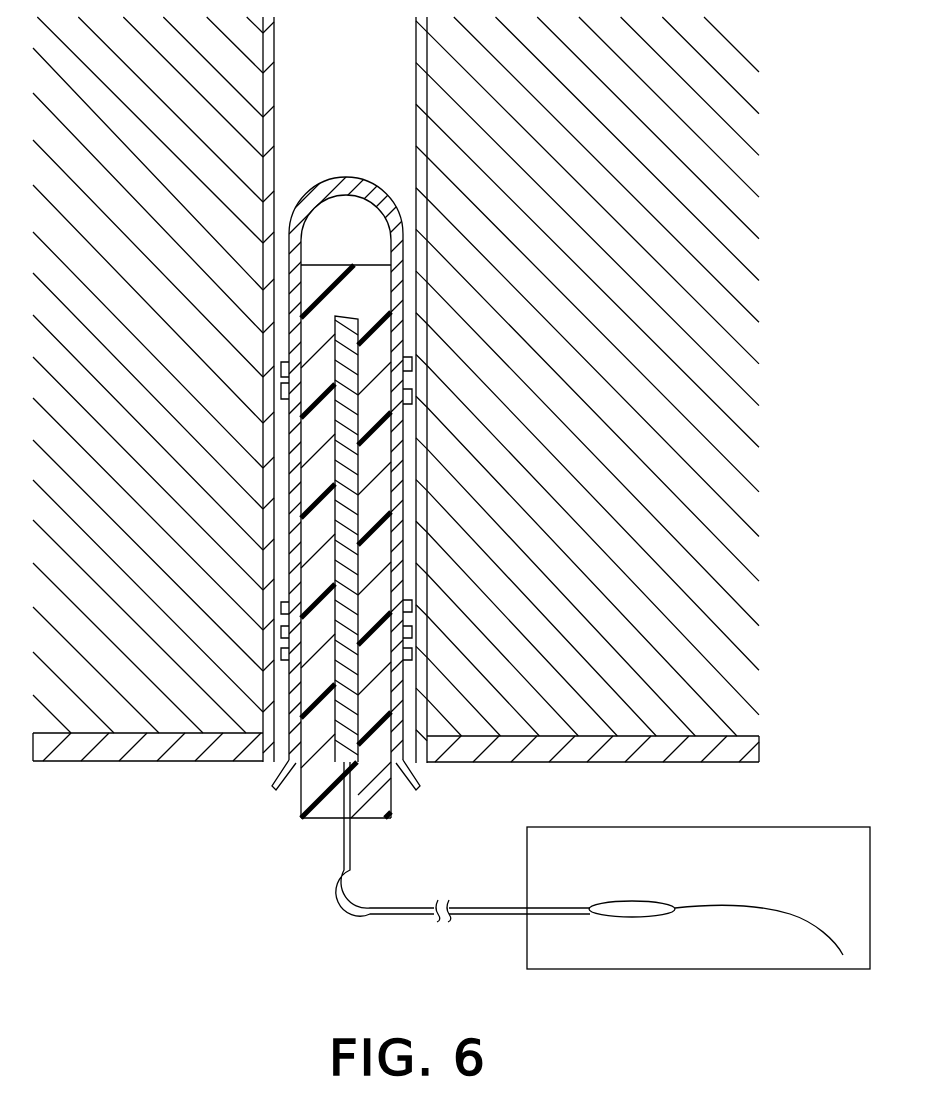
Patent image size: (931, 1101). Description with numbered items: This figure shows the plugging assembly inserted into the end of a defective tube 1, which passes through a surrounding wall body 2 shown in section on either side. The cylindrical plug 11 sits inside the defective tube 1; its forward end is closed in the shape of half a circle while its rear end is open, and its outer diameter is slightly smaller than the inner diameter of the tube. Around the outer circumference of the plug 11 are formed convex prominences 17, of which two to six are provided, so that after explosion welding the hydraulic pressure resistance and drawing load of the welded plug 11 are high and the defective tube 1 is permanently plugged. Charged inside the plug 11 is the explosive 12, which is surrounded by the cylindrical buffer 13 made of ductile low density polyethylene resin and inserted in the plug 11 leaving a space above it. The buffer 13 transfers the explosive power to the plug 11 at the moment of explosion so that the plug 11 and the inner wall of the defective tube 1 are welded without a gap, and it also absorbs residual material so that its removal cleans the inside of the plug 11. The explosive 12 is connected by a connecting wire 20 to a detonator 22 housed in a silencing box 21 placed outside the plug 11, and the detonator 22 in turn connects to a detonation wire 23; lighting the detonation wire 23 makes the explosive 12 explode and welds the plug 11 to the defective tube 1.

The defective tube 1 is at (277, 84).
The wall body 2 is at (198, 408).
The plug 11 is at (350, 178).
The explosive 12 is at (333, 744).
The cylindrical buffer 13 is at (327, 805).
The convex prominences 17 is at (412, 361).
The connecting wire 20 is at (463, 900).
The silencing box 21 is at (815, 827).
The detonator 22 is at (640, 901).
The detonation wire 23 is at (780, 914).